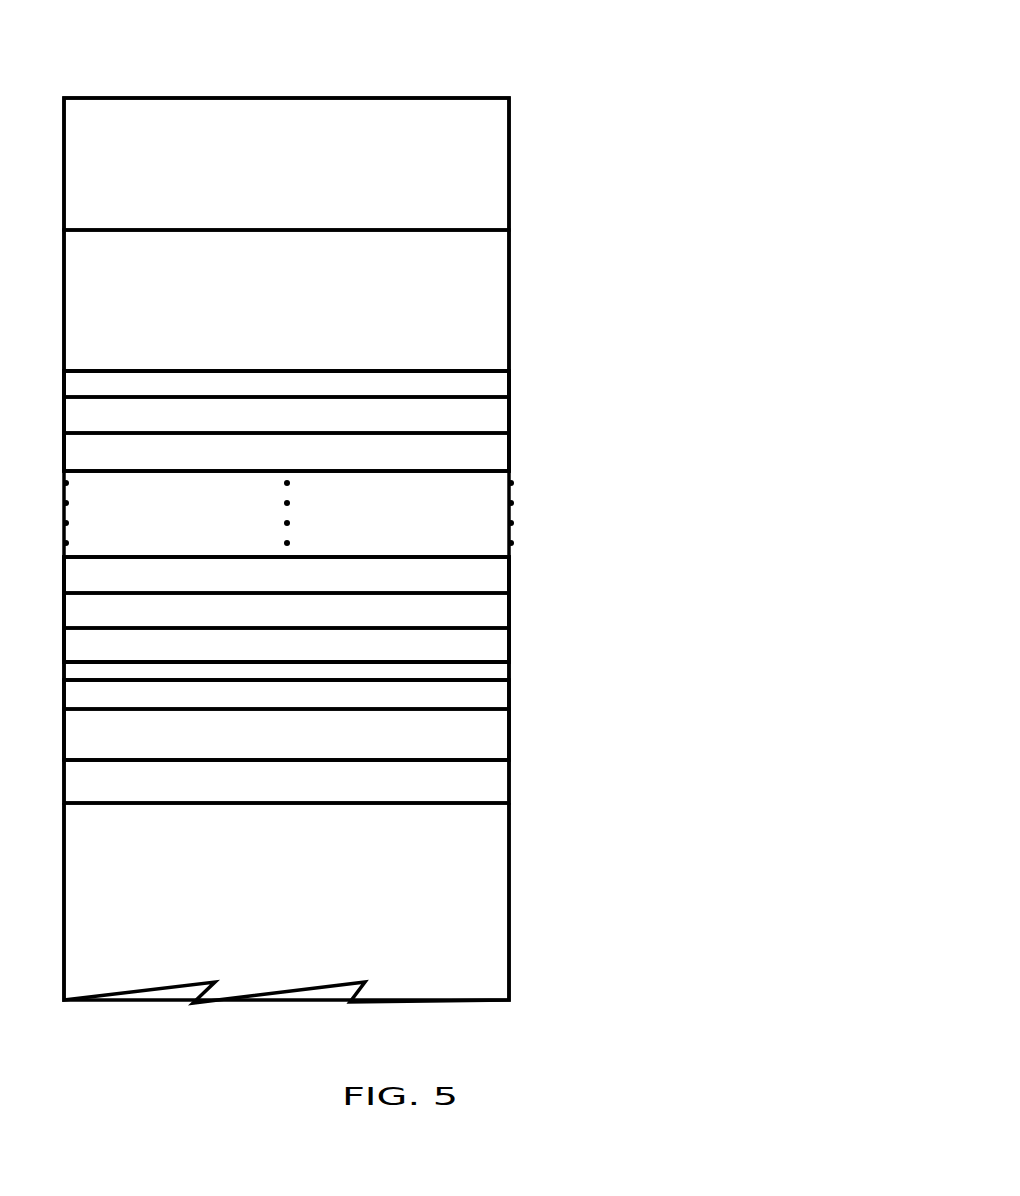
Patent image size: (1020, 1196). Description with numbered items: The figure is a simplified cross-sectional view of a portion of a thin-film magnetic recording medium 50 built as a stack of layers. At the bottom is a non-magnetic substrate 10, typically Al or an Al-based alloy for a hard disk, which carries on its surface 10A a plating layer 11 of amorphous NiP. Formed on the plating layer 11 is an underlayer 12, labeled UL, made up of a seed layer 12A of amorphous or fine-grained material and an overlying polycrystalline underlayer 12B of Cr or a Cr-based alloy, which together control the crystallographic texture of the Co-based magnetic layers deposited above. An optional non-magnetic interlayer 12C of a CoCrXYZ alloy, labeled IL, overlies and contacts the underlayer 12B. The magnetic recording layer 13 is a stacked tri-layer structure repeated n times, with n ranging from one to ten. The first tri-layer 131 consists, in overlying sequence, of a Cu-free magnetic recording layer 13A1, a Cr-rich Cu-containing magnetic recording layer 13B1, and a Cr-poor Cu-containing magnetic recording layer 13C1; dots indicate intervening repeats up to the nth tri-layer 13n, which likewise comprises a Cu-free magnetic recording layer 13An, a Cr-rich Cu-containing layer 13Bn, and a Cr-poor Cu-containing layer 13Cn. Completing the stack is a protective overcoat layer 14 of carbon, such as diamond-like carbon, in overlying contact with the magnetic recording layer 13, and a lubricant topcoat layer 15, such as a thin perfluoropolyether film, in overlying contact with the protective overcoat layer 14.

The thin-film magnetic recording medium 50 is at (437, 78).
The lubricant topcoat layer 15 is at (520, 165).
The protective overcoat layer 14 is at (520, 294).
The magnetic recording layer 13 is at (846, 370).
The nth tri-layer 13n is at (784, 367).
The Cr-poor Cu-containing magnetic recording layer 13Cn is at (520, 383).
The Cr-rich Cu-containing magnetic recording layer 13Bn is at (520, 413).
The Cu-free magnetic recording layer 13An is at (520, 450).
The first tri-layer 131 is at (780, 557).
The Cr-poor Cu-containing magnetic recording layer of first tri-layer 13C1 is at (520, 574).
The Cr-rich Cu-containing magnetic recording layer of first tri-layer 13B1 is at (520, 607).
The Cu-free magnetic recording layer of first tri-layer 13A1 is at (520, 643).
The non-magnetic interlayer 12C is at (520, 668).
The underlayer 12 is at (747, 687).
The polycrystalline underlayer 12B is at (520, 695).
The seed layer 12A is at (520, 740).
The plating layer 11 is at (520, 787).
The substrate surface 10A is at (467, 803).
The non-magnetic substrate 10 is at (520, 917).